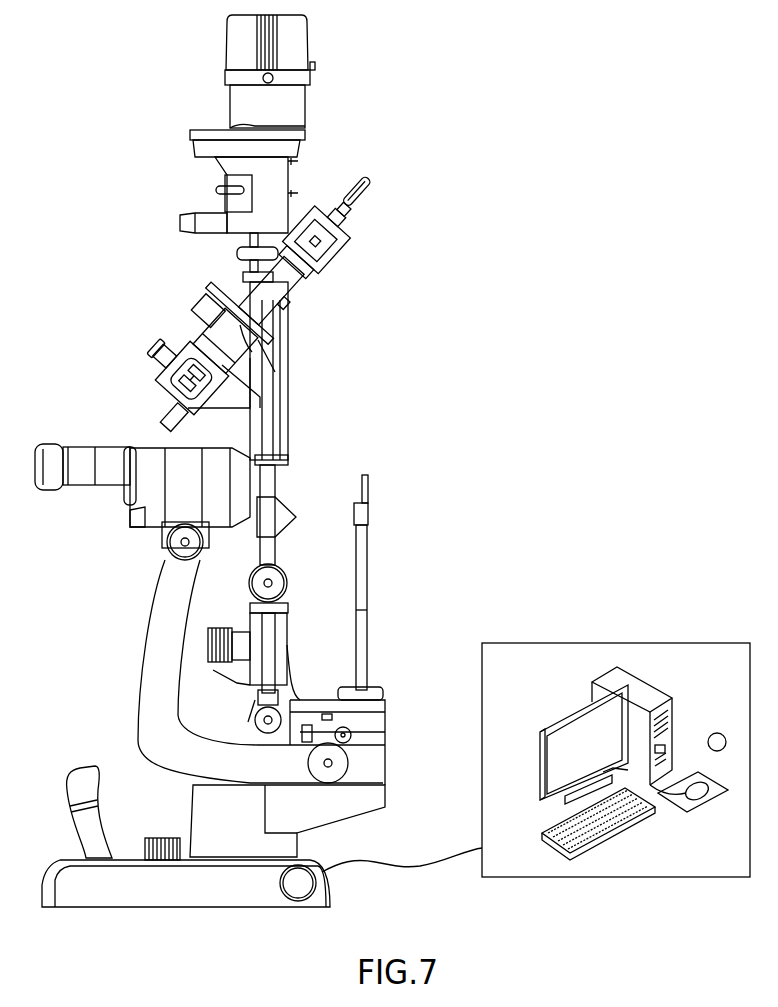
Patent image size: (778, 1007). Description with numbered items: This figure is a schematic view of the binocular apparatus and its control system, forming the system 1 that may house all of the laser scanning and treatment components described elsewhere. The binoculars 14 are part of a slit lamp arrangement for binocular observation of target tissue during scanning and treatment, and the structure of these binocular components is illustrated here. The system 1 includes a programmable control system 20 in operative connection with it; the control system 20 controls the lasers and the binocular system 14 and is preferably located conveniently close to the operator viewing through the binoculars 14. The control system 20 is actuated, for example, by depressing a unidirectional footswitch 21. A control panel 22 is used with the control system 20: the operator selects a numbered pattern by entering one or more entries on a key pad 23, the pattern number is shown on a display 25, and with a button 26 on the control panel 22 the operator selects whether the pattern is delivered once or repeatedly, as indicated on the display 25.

The system 1 is at (225, 43).
The binoculars 14 is at (52, 443).
The programmable control system 20 is at (530, 643).
The unidirectional footswitch 21 is at (660, 890).
The control panel 22 is at (738, 666).
The key pad 23 is at (542, 831).
The display 25 is at (592, 756).
The button 26 is at (719, 733).